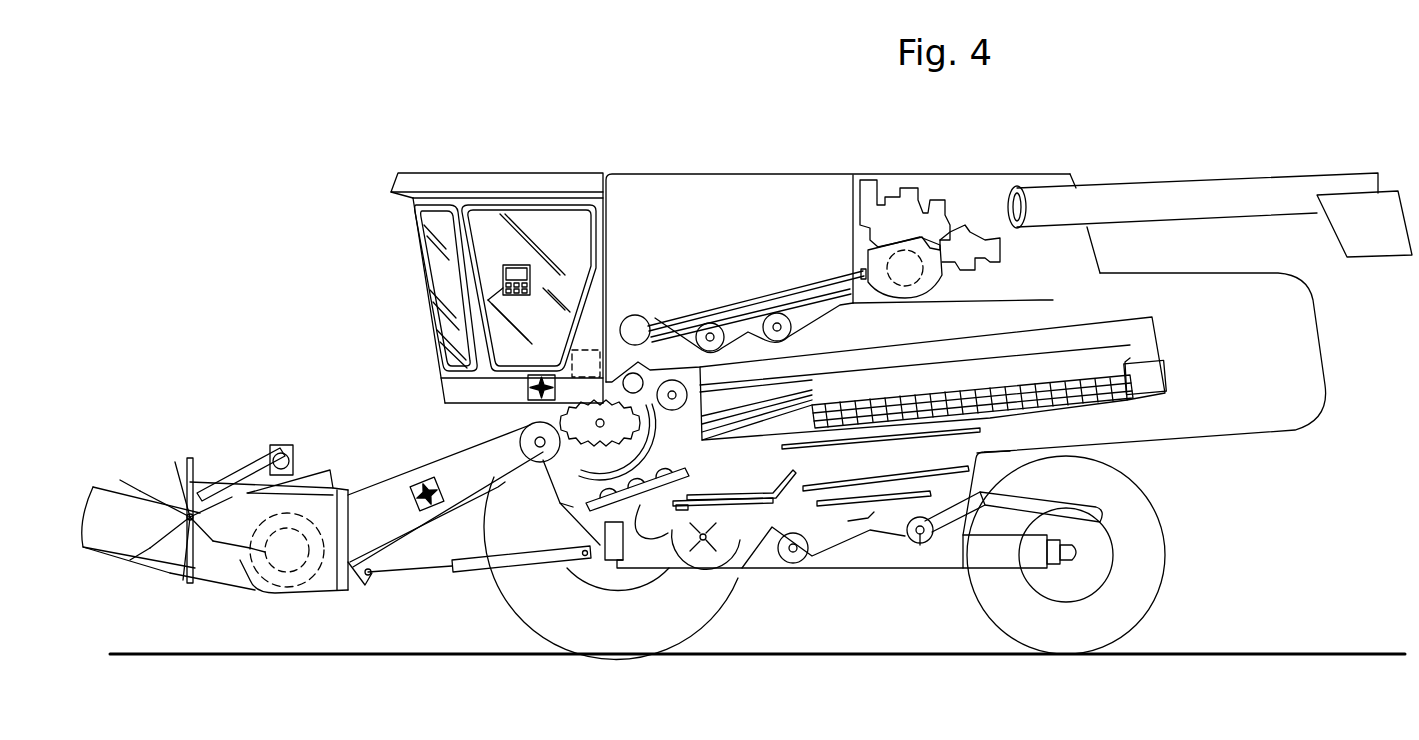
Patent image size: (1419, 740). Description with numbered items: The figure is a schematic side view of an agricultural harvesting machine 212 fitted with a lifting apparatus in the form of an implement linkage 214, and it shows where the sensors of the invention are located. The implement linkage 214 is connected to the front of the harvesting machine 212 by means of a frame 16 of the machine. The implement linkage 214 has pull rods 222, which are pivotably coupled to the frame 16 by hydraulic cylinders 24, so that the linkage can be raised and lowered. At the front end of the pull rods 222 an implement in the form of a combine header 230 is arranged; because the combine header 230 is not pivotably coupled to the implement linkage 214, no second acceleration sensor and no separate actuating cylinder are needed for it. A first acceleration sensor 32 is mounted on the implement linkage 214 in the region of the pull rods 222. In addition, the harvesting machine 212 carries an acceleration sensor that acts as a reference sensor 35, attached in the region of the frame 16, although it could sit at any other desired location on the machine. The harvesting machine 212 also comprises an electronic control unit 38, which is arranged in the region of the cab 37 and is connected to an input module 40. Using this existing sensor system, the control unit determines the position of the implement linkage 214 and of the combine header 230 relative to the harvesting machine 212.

The frame 16 is at (573, 505).
The hydraulic cylinders 24 is at (465, 563).
The first acceleration sensor 32 is at (422, 480).
The reference sensor 35 is at (527, 393).
The cab 37 is at (492, 222).
The electronic control unit 38 is at (588, 352).
The input module 40 is at (517, 273).
The harvesting machine 212 is at (725, 205).
The implement linkage 214 is at (363, 498).
The pull rods 222 is at (455, 467).
The combine header 230 is at (183, 495).